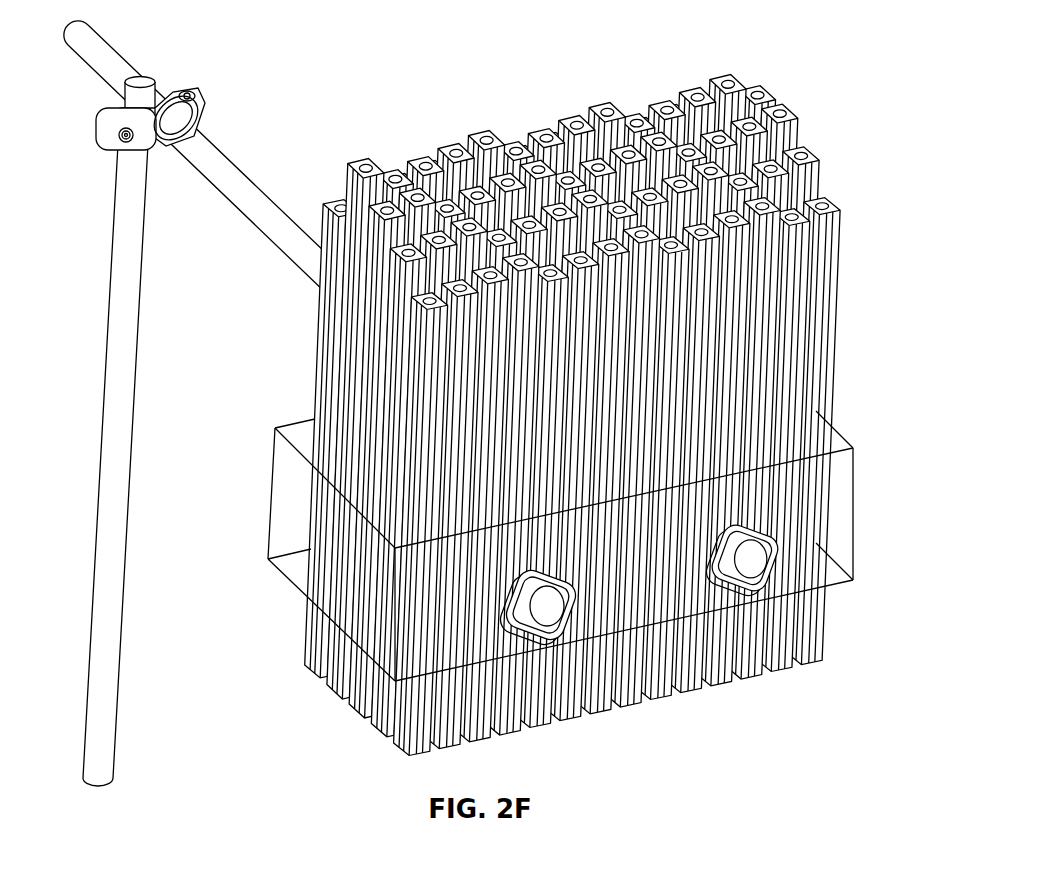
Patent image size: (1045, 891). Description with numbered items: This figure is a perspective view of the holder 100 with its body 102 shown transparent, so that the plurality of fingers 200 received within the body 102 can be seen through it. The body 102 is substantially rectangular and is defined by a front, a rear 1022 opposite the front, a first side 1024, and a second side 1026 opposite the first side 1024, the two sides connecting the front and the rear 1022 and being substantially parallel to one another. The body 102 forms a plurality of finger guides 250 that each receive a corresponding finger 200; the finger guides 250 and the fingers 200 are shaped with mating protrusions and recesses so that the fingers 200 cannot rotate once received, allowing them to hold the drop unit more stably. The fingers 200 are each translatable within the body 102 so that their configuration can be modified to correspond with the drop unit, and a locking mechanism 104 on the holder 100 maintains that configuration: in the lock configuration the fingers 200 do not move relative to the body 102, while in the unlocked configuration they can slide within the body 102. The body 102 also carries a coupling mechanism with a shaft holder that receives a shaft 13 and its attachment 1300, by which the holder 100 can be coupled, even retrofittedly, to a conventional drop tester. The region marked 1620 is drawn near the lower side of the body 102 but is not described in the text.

The shaft 13 is at (112, 262).
The attachment 1300 is at (232, 174).
The fingers 200 is at (772, 96).
The holder 100 is at (562, 414).
The body 102 is at (562, 520).
The rear 1022 is at (290, 412).
The first side 1024 is at (300, 546).
The second side 1026 is at (820, 406).
The finger guides 250 is at (847, 443).
The frame right bottom edge 1620 is at (816, 566).
The locking mechanism 104 is at (744, 557).